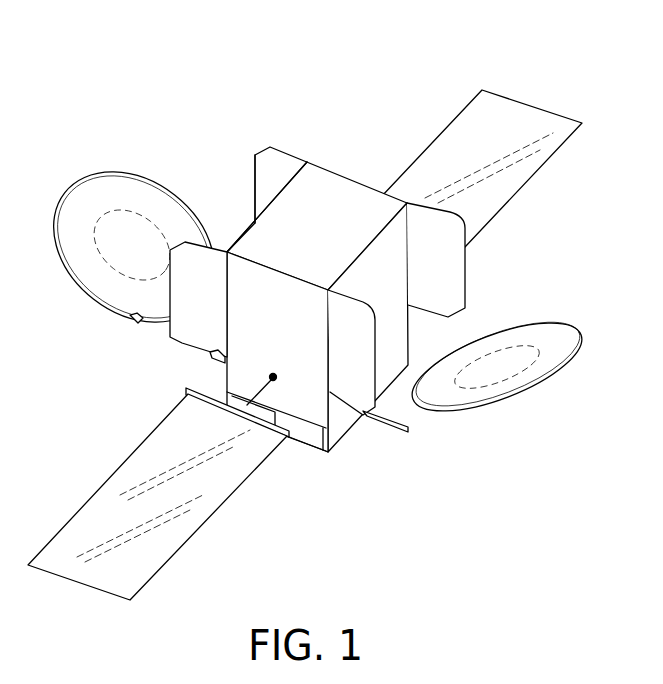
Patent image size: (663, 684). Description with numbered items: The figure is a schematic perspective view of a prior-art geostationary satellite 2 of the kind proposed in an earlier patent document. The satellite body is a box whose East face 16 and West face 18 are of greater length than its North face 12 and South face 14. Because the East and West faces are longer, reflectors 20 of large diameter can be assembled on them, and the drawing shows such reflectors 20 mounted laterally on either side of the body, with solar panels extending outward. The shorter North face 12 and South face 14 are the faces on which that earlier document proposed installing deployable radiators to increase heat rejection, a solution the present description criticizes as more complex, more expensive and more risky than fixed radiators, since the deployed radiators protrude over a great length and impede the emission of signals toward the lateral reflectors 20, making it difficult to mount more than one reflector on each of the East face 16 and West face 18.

The geostationary satellite 2 is at (308, 347).
The North face 12 is at (335, 176).
The South face 14 is at (308, 392).
The East face 16 is at (243, 229).
The West face 18 is at (345, 410).
The reflectors 20 is at (137, 243).